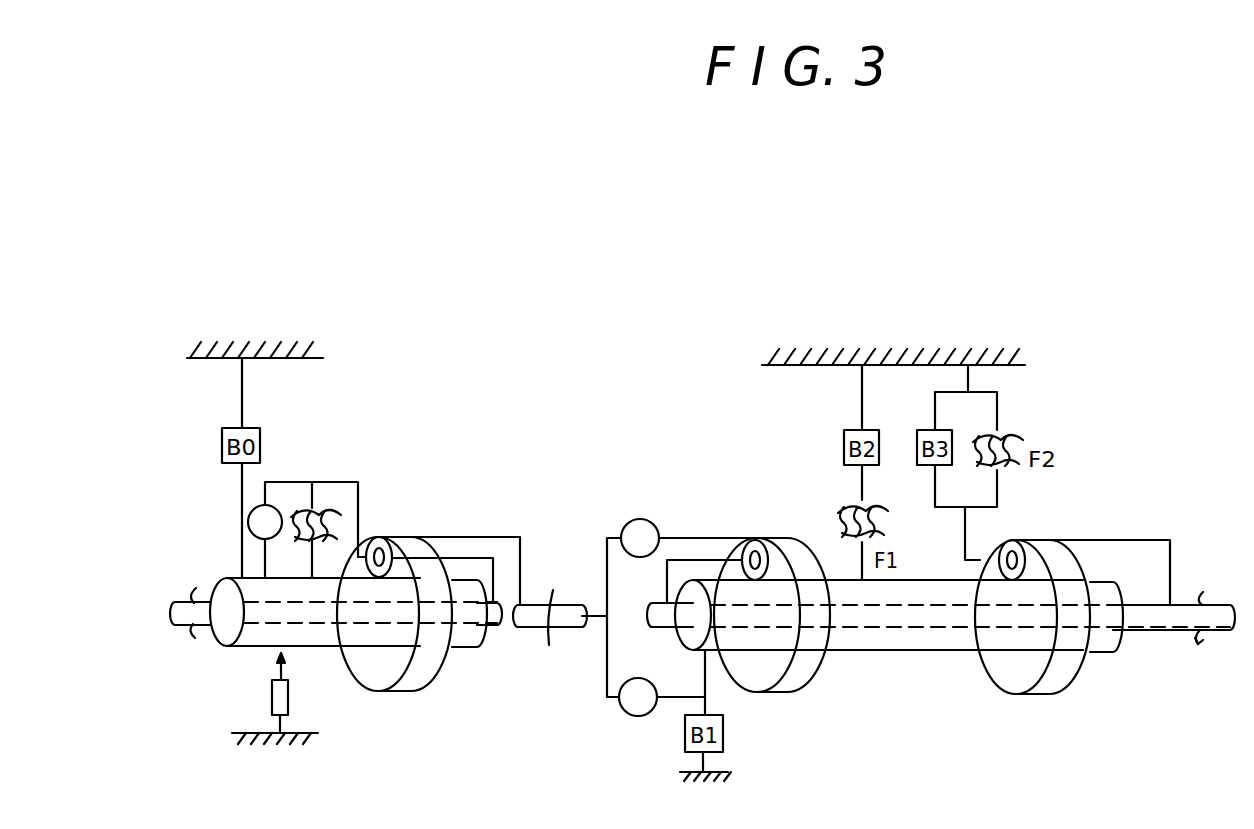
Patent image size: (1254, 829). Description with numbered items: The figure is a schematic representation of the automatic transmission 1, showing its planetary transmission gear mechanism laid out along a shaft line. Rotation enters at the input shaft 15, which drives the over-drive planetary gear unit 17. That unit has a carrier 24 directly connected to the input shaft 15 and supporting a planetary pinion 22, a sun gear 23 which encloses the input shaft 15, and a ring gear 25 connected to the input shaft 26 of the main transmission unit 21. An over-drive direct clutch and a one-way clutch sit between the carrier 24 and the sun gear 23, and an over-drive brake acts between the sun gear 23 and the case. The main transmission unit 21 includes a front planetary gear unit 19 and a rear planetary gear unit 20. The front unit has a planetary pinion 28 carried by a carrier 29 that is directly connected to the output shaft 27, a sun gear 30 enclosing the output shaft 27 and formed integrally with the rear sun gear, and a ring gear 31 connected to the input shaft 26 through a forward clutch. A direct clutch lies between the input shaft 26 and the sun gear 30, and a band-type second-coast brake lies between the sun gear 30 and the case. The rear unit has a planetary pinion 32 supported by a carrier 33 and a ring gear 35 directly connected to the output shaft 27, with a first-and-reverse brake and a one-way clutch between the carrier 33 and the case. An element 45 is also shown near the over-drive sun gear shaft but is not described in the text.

The automatic transmission 1 is at (637, 343).
The input shaft 15 is at (203, 605).
The over-drive planetary gear unit 17 is at (428, 604).
The front planetary gear unit 19 is at (772, 586).
The rear planetary gear unit 20 is at (1072, 570).
The main transmission unit 21 is at (768, 502).
The planetary pinion 22 is at (389, 536).
The sun gear 23 is at (318, 648).
The carrier 24 is at (357, 482).
The ring gear 25 is at (428, 672).
The input shaft 26 is at (565, 620).
The output shaft 27 is at (1162, 625).
The planetary pinion 28 is at (752, 542).
The carrier 29 is at (705, 558).
The sun gear 30 is at (907, 653).
The ring gear 31 is at (788, 685).
The planetary pinion 32 is at (1012, 542).
The carrier 33 is at (965, 540).
The ring gear 35 is at (1065, 548).
The actuator 45 is at (270, 702).